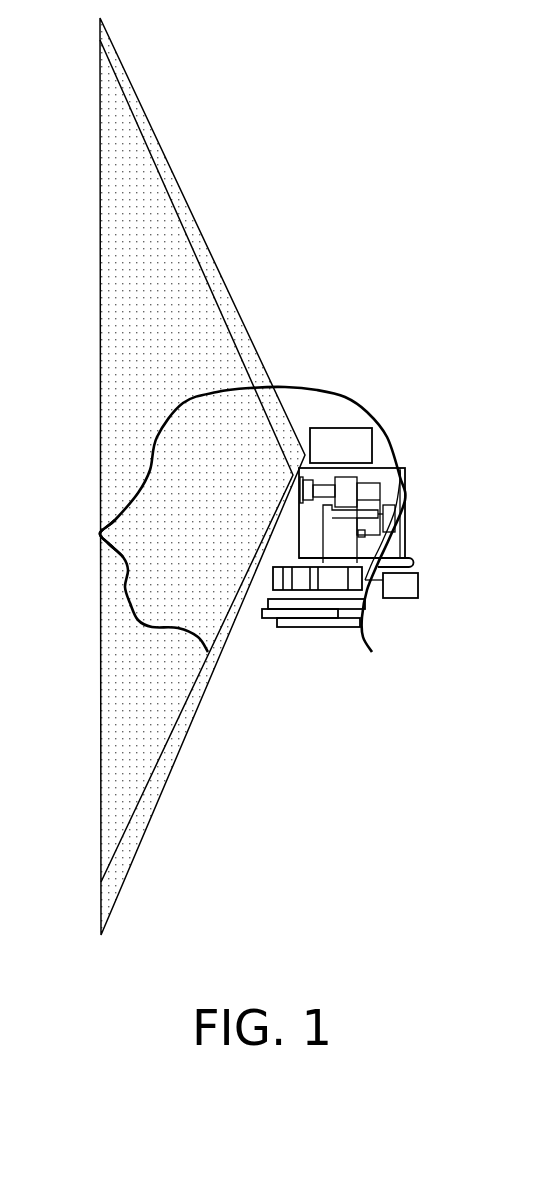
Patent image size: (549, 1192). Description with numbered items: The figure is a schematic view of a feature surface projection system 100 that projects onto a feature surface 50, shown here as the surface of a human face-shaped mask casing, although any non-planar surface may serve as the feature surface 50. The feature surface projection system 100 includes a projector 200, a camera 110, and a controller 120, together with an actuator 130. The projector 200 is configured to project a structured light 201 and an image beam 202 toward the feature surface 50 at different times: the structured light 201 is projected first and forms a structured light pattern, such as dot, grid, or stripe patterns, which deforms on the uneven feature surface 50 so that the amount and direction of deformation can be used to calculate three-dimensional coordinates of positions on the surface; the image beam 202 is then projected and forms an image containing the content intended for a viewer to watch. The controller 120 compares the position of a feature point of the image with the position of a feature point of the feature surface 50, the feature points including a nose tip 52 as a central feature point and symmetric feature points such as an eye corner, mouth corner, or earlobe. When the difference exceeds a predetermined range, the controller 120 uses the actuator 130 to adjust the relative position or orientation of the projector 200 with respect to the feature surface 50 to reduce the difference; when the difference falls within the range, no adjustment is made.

The feature surface 50 is at (160, 438).
The nose tip 52 is at (98, 532).
The feature surface projection system 100 is at (376, 536).
The camera 110 is at (347, 437).
The controller 120 is at (312, 607).
The actuator 130 is at (410, 585).
The projector 200 is at (342, 532).
The structured light 201 is at (202, 476).
The image beam 202 is at (187, 752).